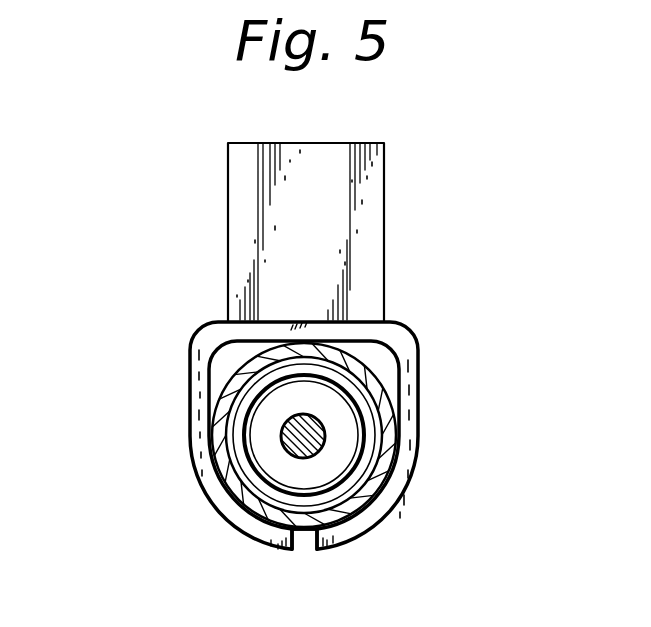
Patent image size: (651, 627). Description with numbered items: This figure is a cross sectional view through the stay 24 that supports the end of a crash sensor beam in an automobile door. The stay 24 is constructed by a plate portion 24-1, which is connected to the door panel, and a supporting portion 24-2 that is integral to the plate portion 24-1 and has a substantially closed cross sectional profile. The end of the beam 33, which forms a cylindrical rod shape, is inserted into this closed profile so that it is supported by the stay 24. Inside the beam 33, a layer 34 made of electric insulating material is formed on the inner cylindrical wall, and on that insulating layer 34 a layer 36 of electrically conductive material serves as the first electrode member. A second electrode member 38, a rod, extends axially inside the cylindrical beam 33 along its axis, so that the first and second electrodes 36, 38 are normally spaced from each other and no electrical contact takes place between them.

The stay 24 is at (194, 306).
The plate portion 24-1 is at (250, 211).
The supporting portion 24-2 is at (192, 383).
The beam 33 is at (292, 532).
The layer made of electric insulating material 34 is at (230, 453).
The first electrode member 36 is at (245, 474).
The second electrode member 38 is at (297, 453).